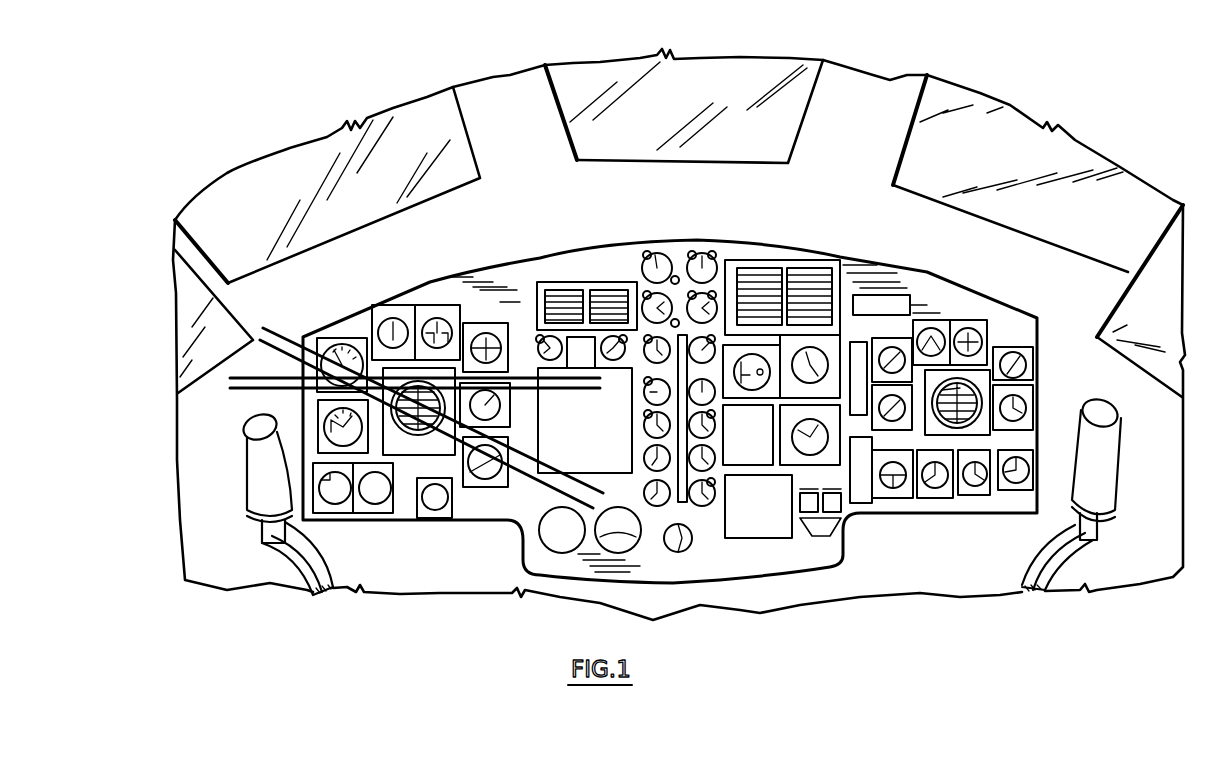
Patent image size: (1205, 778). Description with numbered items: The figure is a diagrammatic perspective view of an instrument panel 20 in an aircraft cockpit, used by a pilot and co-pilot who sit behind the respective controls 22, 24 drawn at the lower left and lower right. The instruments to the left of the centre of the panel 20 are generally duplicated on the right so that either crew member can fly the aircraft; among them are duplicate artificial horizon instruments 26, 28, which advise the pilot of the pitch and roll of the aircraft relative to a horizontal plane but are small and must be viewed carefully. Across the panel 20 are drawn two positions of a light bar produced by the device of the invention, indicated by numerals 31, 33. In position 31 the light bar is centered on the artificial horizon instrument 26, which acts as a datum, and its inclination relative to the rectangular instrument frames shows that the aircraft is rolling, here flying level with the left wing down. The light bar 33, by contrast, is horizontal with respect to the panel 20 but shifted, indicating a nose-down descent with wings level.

The instrument panel 20 is at (757, 250).
The control 22 is at (330, 543).
The control 24 is at (1035, 555).
The artificial horizon instrument 26 is at (408, 447).
The artificial horizon instrument 28 is at (1030, 390).
The light bar position 31 is at (283, 332).
The light bar position 33 is at (242, 392).